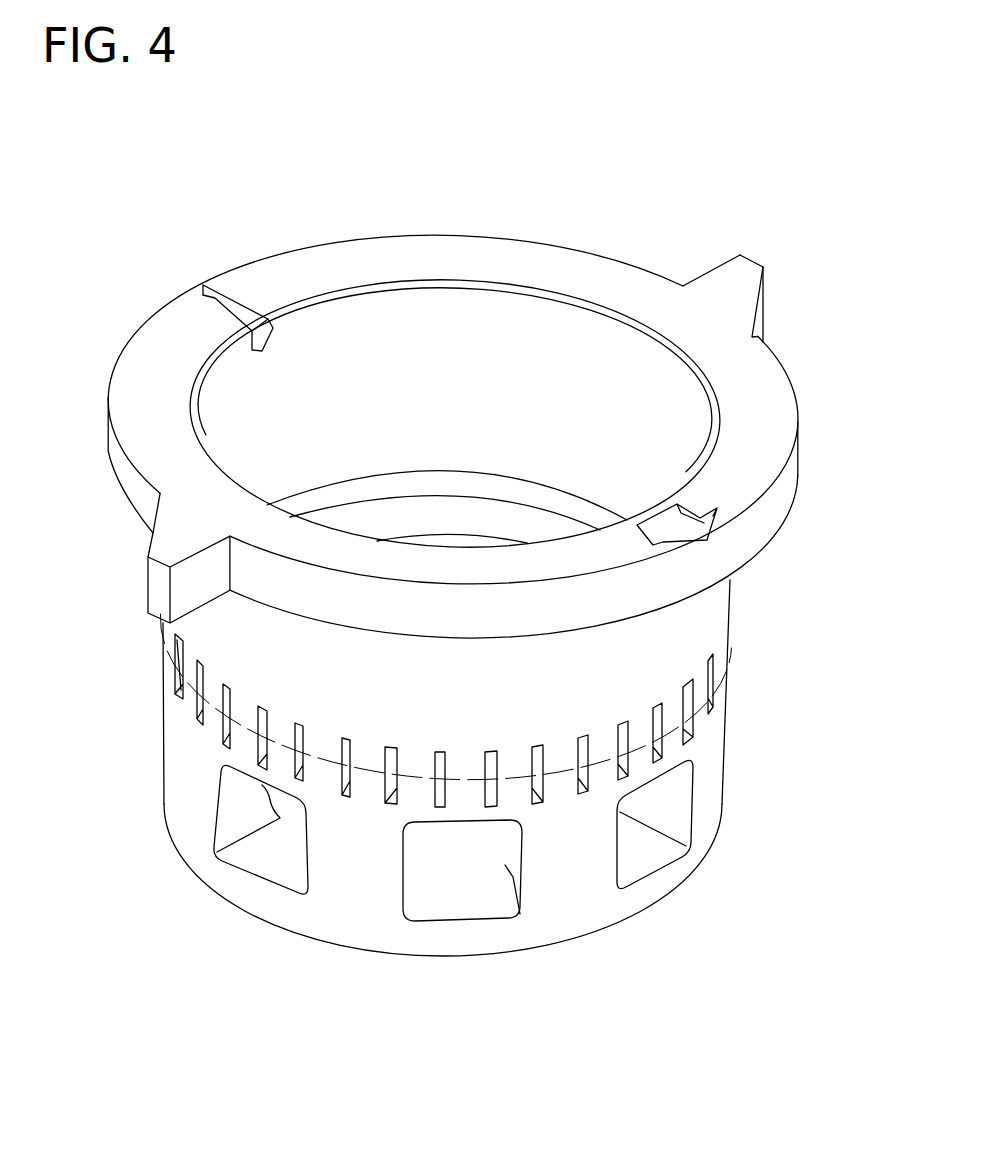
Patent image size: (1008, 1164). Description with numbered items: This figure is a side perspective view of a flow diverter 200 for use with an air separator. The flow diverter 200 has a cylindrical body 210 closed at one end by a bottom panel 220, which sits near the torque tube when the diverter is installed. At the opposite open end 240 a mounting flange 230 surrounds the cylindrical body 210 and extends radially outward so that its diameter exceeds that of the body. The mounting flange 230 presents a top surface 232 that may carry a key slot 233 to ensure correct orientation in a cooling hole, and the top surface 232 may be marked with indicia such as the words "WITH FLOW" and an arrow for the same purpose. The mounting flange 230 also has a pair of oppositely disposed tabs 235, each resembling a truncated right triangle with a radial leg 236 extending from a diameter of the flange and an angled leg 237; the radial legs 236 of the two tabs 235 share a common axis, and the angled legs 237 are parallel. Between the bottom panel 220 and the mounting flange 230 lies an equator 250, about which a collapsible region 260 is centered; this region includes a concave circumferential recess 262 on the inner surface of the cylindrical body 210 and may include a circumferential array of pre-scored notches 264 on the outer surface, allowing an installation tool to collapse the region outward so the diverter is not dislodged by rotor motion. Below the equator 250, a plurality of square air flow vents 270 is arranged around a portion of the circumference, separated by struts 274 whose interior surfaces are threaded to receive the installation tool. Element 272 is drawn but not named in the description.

The flow diverter 200 is at (116, 216).
The cylindrical body 210 is at (742, 650).
The bottom panel 220 is at (543, 935).
The mounting flange 230 is at (792, 368).
The top surface 232 is at (552, 265).
The key slot 233 is at (208, 283).
The tabs 235 is at (743, 280).
The radial leg 236 is at (707, 278).
The angled leg 237 is at (767, 297).
The open end 240 is at (472, 325).
The equator 250 is at (690, 692).
The collapsible region 260 is at (153, 628).
The concave circumferential recess 262 is at (532, 518).
The pre-scored notches 264 is at (225, 723).
The air flow vents 270 is at (438, 902).
The window inner edge 272 is at (673, 853).
The struts 274 is at (573, 878).